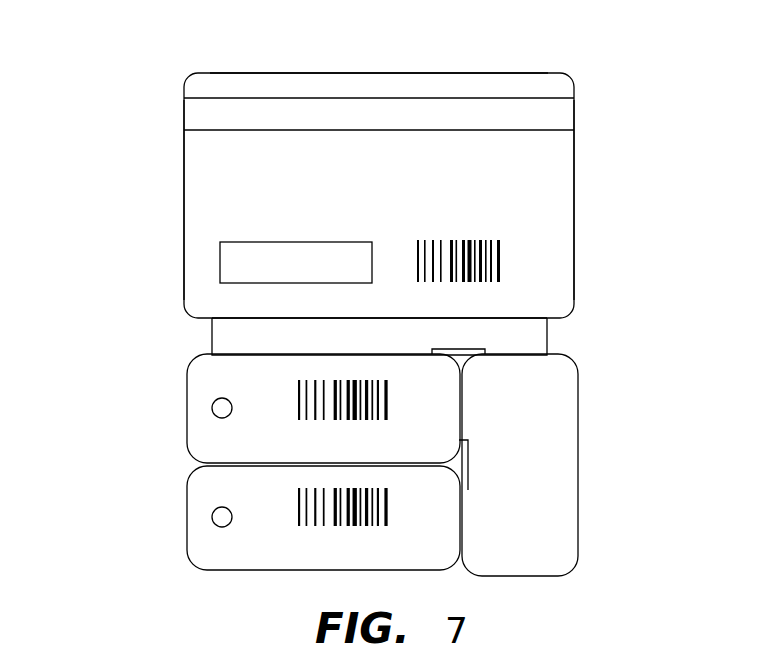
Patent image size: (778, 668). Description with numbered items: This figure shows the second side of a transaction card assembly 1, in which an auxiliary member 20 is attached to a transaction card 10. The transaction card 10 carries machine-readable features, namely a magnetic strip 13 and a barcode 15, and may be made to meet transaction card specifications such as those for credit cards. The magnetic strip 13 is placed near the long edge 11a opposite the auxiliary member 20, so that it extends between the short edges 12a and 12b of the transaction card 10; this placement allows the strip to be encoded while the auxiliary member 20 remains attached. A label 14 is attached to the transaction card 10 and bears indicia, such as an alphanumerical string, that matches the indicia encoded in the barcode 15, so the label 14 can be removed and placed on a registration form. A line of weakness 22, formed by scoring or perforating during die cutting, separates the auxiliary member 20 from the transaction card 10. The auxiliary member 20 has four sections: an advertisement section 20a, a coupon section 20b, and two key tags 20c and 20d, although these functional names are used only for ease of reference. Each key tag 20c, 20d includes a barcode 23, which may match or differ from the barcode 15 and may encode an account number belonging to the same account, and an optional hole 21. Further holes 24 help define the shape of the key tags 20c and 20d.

The transaction card assembly 1 is at (106, 64).
The transaction card 10 is at (578, 157).
The long edge 11a is at (505, 73).
The magnetic strip 13 is at (576, 120).
The short edge 12a is at (184, 174).
The short edge 12b is at (576, 210).
The label 14 is at (220, 252).
The barcode 15 is at (503, 263).
The line of weakness 22 is at (533, 315).
The advertisement section 20a is at (548, 338).
The auxiliary member 20 is at (389, 486).
The key tag 20d is at (188, 432).
The key tag 20c is at (192, 558).
The coupon section 20b is at (579, 495).
The hole 24 is at (460, 364).
The hole 21 is at (212, 402).
The barcode 23 is at (298, 405).